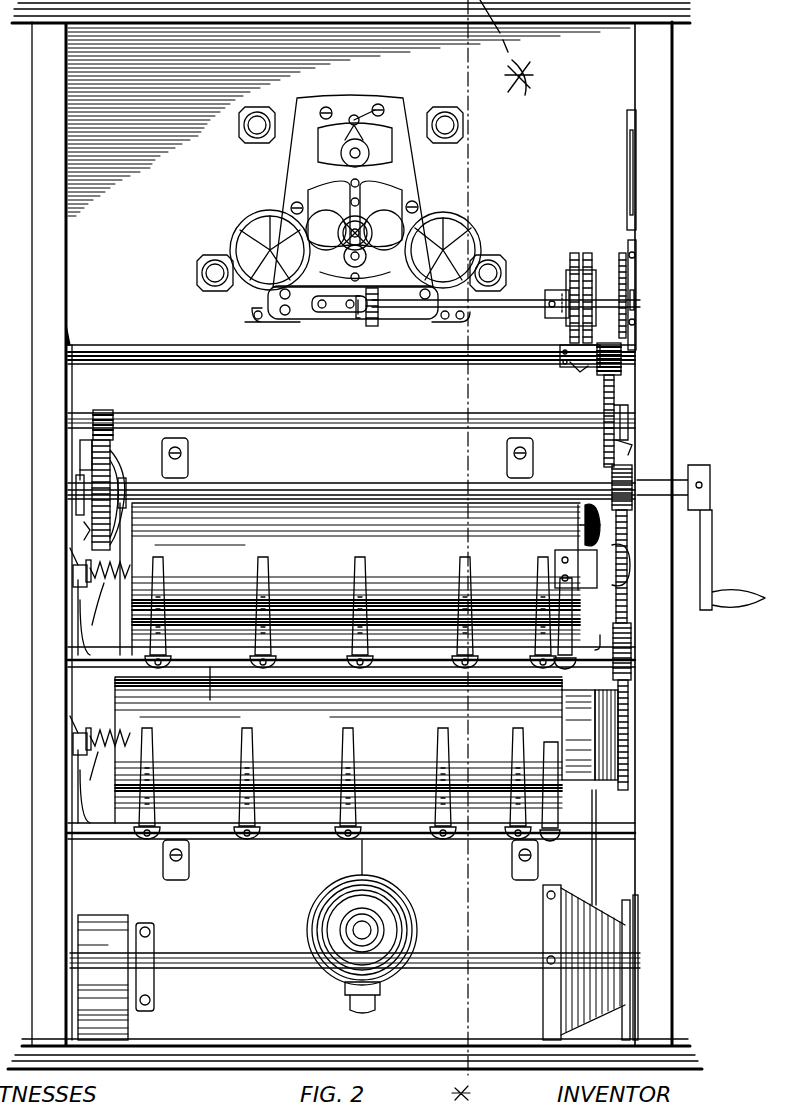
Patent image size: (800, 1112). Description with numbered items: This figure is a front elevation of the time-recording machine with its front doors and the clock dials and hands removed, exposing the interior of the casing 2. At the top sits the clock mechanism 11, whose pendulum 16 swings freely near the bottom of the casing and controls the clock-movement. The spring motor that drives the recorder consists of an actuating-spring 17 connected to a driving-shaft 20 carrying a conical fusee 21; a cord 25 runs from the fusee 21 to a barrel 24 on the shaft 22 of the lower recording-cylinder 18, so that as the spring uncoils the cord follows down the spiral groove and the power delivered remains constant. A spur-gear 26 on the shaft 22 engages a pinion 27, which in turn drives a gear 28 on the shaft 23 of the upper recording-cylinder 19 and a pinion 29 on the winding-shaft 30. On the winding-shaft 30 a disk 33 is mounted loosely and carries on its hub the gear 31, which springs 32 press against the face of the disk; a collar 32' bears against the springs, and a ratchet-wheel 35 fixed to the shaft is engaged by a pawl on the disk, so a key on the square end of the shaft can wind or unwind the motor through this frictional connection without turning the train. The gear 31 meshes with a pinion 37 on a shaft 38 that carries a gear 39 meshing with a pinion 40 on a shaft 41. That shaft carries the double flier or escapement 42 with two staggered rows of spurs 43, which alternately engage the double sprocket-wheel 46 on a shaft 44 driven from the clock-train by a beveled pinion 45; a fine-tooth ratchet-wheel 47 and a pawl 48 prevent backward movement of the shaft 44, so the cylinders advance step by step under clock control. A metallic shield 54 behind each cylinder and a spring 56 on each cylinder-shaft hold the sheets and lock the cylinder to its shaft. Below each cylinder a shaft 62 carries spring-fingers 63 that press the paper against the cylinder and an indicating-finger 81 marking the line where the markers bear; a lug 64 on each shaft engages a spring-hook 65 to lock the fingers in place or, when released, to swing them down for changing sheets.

The casing 2 is at (660, 380).
The clock mechanism 11 is at (412, 190).
The pendulum 16 is at (412, 908).
The actuating-spring 17 is at (105, 915).
The recording-cylinder 18 is at (351, 758).
The recording-cylinder 19 is at (351, 585).
The driving-shaft 20 is at (252, 970).
The fusee 21 is at (548, 926).
The cylinder-shaft 22 is at (105, 752).
The cylinder-shaft 23 is at (112, 583).
The barrel 24 is at (580, 700).
The cord 25 is at (596, 855).
The spur-gear 26 is at (618, 702).
The pinion 27 is at (632, 645).
The gear 28 is at (628, 600).
The pinion 29 is at (630, 482).
The winding-shaft 30 is at (436, 482).
The gear 31 is at (110, 450).
The springs 32 is at (134, 496).
The collar 32' is at (143, 486).
The disk 33 is at (80, 472).
The ratchet-wheel 35 is at (84, 535).
The pinion 37 is at (108, 414).
The shaft 38 is at (228, 418).
The gear 39 is at (606, 396).
The pinion 40 is at (597, 365).
The shaft 41 is at (505, 358).
The flier 42 is at (566, 350).
The spurs 43 is at (578, 366).
The shaft 44 is at (462, 305).
The beveled pinion 45 is at (373, 320).
The double sprocket-wheel 46 is at (575, 258).
The fine-tooth ratchet-wheel 47 is at (618, 278).
The pawl 48 is at (632, 256).
The metallic shield 54 is at (585, 533).
The spring 56 is at (92, 590).
The shaft 62 is at (214, 668).
The spring-fingers 63 is at (165, 573).
The lug 64 is at (75, 606).
The spring-hook 65 is at (75, 575).
The indicating-finger 81 is at (565, 578).